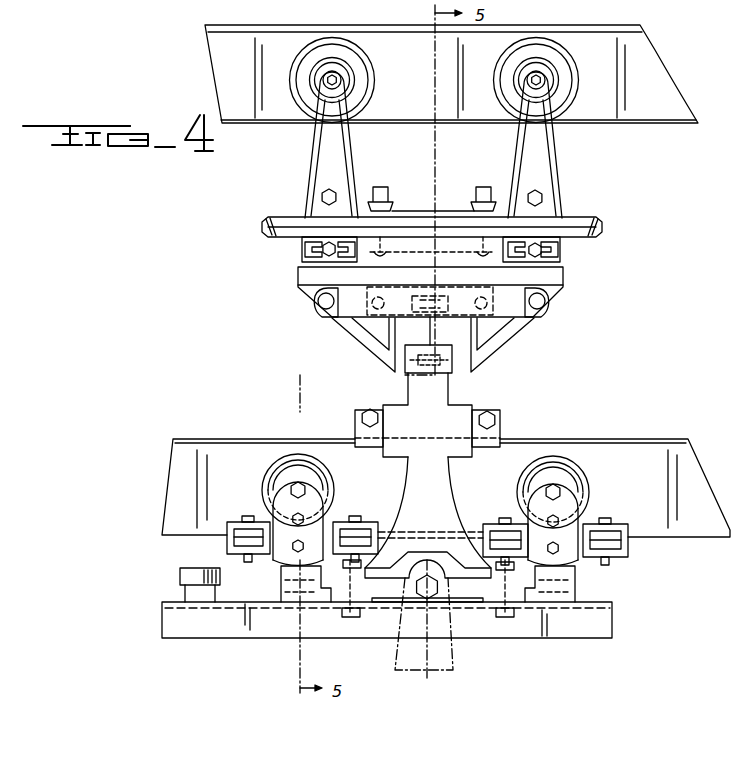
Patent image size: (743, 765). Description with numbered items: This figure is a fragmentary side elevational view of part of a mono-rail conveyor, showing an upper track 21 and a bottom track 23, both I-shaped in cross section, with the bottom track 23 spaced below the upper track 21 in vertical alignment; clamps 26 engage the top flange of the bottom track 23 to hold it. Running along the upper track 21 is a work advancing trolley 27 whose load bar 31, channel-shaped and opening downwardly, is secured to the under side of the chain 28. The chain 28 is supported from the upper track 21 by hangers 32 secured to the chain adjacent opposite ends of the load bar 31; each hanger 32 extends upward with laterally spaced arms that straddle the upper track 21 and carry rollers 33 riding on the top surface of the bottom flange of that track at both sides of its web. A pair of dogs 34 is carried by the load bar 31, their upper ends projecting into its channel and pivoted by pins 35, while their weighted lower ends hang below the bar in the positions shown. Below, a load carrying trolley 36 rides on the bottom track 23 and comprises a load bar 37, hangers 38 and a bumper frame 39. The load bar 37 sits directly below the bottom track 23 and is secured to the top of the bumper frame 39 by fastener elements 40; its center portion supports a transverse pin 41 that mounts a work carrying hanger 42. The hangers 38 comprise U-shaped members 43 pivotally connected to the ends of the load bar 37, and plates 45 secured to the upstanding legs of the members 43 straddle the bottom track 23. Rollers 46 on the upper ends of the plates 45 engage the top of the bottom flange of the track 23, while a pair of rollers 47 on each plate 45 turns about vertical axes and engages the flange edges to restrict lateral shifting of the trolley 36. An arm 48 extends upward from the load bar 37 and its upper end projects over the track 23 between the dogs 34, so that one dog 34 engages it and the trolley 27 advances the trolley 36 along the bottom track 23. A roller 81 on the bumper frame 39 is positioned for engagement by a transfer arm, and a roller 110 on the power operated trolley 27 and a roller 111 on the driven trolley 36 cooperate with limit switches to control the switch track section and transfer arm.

The upper track 21 is at (683, 107).
The bottom track 23 is at (652, 450).
The clamps 26 is at (357, 418).
The work advancing trolley 27 is at (565, 202).
The chain 28 is at (605, 235).
The load bar 31 is at (557, 278).
The hangers 32 is at (345, 175).
The rollers 33 is at (362, 88).
The dogs 34 is at (378, 336).
The pins 35 is at (318, 300).
The load carrying trolley 36 is at (452, 498).
The load bar 37 is at (477, 590).
The hangers 38 is at (273, 560).
The bumper frame 39 is at (598, 622).
The fastener elements 40 is at (366, 571).
The pin 41 is at (427, 592).
The work carrying hanger 42 is at (424, 640).
The U-shaped members 43 is at (282, 590).
The plates 45 is at (272, 520).
The rollers 46 is at (282, 471).
The rollers 47 is at (243, 532).
The arm 48 is at (447, 412).
The roller 81 is at (195, 573).
The roller 110 is at (445, 310).
The roller 111 is at (433, 338).